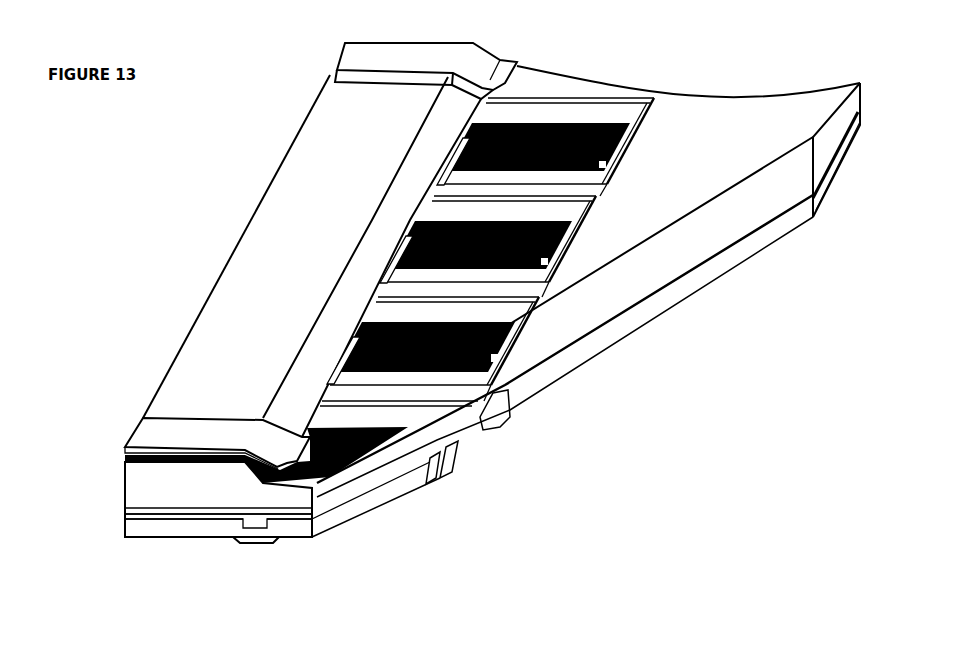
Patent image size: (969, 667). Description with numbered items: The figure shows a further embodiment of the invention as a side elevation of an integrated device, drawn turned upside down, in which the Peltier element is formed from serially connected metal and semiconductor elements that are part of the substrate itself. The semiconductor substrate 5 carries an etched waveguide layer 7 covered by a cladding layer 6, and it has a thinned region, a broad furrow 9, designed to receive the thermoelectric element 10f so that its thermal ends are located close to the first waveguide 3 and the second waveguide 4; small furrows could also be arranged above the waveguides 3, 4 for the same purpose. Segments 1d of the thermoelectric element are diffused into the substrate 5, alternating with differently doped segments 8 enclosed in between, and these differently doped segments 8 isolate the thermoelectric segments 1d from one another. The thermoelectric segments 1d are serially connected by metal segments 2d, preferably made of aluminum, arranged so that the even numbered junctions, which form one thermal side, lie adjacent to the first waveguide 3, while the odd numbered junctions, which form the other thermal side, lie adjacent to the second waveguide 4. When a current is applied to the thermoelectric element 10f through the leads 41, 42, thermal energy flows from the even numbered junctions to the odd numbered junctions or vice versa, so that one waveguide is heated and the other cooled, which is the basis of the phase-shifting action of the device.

The thermoelectric element 10f is at (333, 213).
The lead 42 is at (373, 58).
The lead 41 is at (138, 413).
The broad furrow 9 is at (425, 167).
The segments 1d is at (372, 458).
The substrate 5 is at (175, 485).
The waveguide layer 7 is at (192, 515).
The cladding layer 6 is at (217, 525).
The second waveguide 4 is at (260, 518).
The first waveguide 3 is at (507, 412).
The metal segments 2d is at (452, 455).
The differently doped segments 8 is at (433, 462).